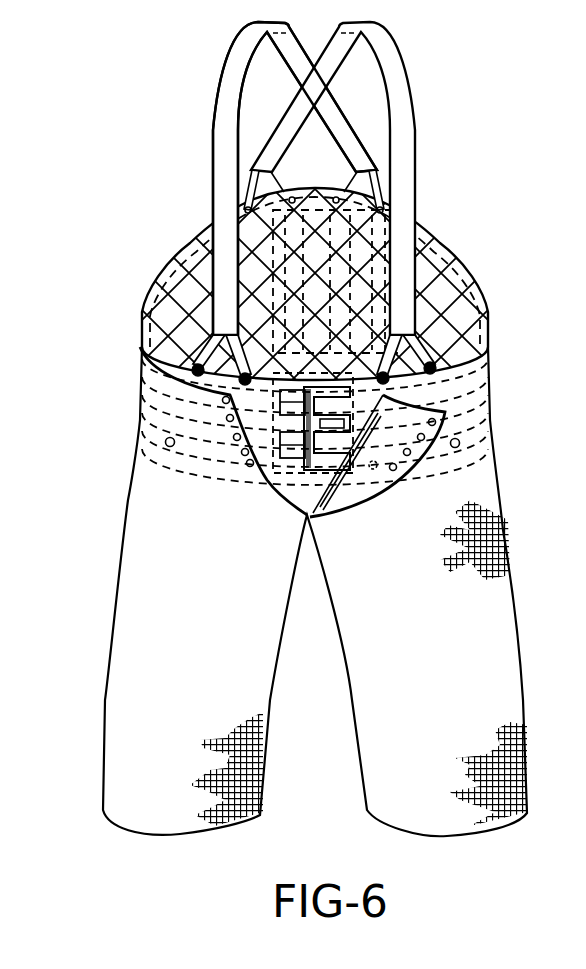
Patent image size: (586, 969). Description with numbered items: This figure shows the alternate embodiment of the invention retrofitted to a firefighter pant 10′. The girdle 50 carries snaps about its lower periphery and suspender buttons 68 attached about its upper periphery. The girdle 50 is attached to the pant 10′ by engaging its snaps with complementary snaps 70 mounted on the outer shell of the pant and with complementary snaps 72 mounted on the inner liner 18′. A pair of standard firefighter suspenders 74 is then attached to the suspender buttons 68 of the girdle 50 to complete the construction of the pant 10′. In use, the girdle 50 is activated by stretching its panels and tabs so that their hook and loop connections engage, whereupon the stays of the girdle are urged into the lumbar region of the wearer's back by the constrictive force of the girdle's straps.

The firefighter pant 10′ is at (131, 458).
The inner liner 18′ is at (447, 268).
The girdle 50 is at (455, 333).
The suspender buttons 68 is at (142, 355).
The complementary snaps 70 is at (250, 468).
The complementary snaps 72 is at (218, 338).
The firefighter suspenders 74 is at (407, 50).